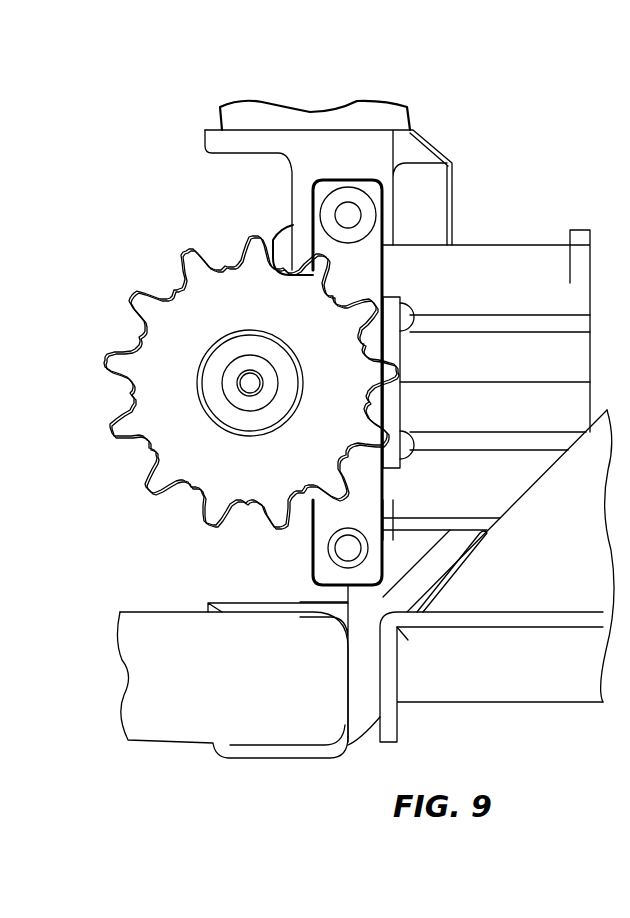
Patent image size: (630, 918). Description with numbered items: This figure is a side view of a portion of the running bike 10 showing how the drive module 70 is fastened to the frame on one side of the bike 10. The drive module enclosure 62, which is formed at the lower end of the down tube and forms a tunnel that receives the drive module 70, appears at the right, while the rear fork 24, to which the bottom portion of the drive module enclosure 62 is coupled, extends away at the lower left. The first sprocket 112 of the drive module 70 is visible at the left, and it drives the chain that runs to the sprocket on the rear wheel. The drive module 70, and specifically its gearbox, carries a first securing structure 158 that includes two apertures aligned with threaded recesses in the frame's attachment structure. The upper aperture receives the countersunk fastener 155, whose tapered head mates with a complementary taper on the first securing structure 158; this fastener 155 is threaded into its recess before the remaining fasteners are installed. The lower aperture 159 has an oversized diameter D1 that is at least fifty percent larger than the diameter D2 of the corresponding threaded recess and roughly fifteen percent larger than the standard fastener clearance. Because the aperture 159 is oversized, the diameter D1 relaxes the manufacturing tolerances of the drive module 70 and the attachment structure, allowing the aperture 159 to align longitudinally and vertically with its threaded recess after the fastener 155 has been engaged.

The drive module 70 is at (546, 196).
The drive module enclosure 62 is at (560, 573).
The first securing structure 158 is at (395, 265).
The fastener 155 is at (335, 200).
The aperture 159 is at (328, 535).
The first sprocket 112 is at (213, 462).
The rear fork 24 is at (188, 715).
The bike 10 is at (341, 773).
The oversized diameter D1 is at (348, 585).
The diameter of the threaded recess D2 is at (307, 548).